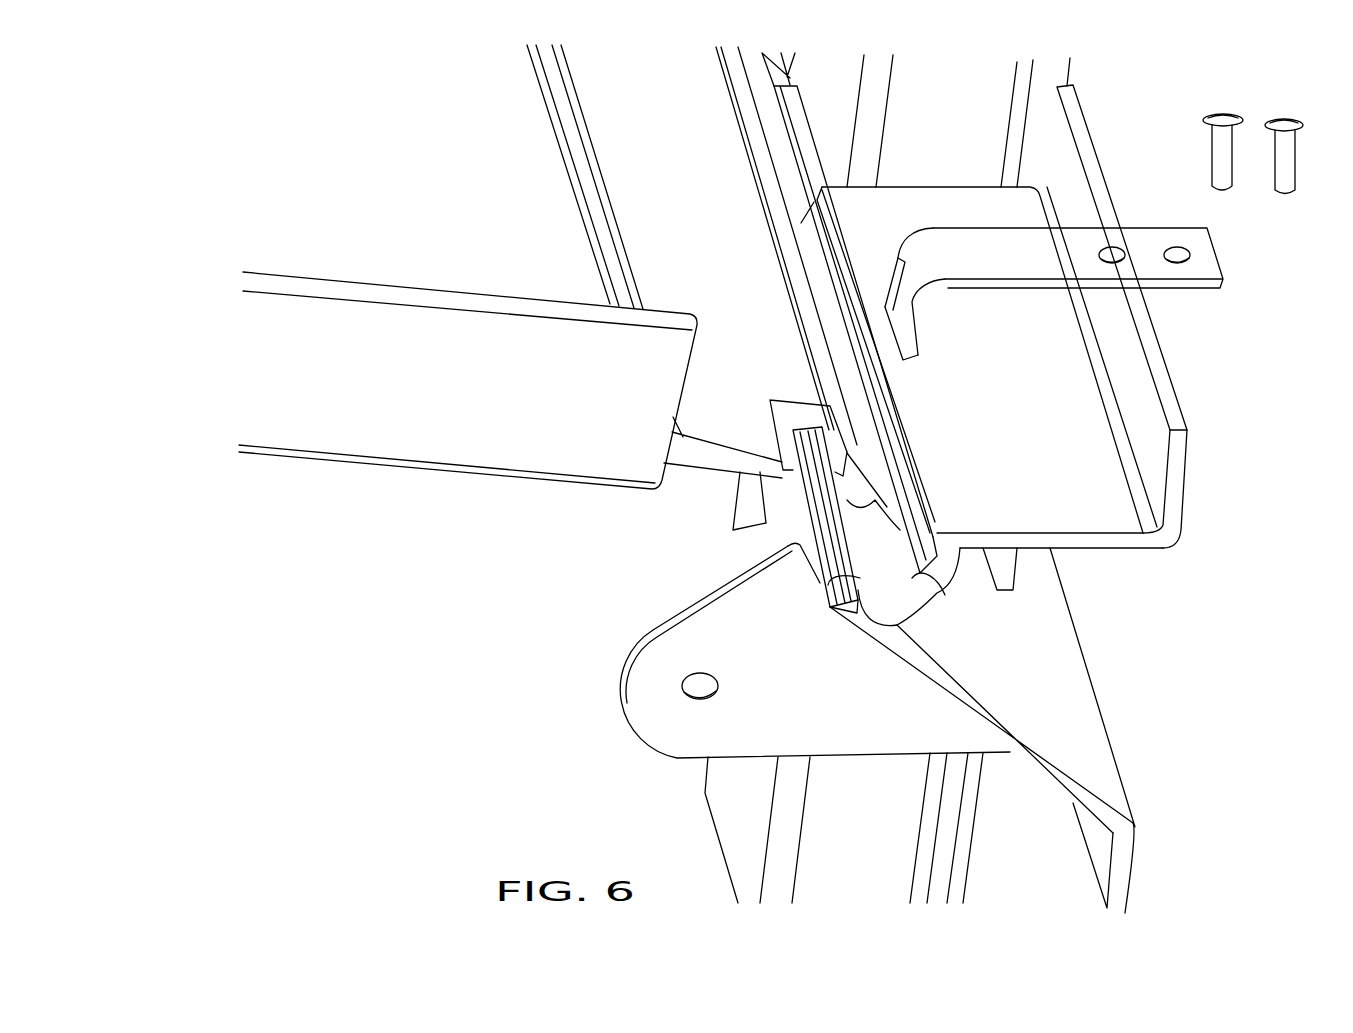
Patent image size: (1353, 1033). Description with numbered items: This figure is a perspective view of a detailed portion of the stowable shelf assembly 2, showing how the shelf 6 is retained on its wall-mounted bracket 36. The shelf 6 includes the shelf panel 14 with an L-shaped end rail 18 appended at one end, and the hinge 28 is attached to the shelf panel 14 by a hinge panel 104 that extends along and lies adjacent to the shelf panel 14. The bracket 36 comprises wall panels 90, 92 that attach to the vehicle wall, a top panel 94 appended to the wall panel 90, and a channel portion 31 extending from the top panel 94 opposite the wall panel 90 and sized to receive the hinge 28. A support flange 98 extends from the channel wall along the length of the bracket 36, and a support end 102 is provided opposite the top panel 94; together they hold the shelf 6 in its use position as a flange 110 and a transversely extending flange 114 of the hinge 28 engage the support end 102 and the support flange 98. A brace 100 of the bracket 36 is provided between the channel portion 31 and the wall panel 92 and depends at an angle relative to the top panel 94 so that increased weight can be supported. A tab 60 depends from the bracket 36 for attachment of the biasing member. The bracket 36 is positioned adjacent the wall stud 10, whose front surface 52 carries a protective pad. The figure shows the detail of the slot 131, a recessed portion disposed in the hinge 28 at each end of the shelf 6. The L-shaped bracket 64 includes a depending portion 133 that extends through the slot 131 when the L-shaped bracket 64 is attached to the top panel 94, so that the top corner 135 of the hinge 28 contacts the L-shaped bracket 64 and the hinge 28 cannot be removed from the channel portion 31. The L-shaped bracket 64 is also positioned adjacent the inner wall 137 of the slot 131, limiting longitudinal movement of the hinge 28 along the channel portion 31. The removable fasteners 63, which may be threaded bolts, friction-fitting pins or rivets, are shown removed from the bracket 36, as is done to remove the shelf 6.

The stowable shelf assembly 2 is at (493, 636).
The shelf 6 is at (361, 494).
The wall stud 10 is at (838, 82).
The shelf panel 14 is at (353, 195).
The end rail 18 is at (485, 398).
The hinge 28 is at (658, 226).
The channel portion 31 is at (893, 585).
The bracket 36 is at (1068, 403).
The front surface 52 is at (848, 128).
The tab 60 is at (745, 715).
The fasteners 63 is at (1208, 150).
The L-shaped bracket 64 is at (991, 242).
The wall panel 90 is at (1148, 430).
The wall panel 92 is at (1105, 850).
The top panel 94 is at (1080, 477).
The support flange 98 is at (908, 512).
The brace 100 is at (1062, 701).
The support end 102 is at (833, 590).
The hinge panel 104 is at (730, 280).
The flange 110 is at (857, 596).
The flange 114 is at (900, 533).
The slot 131 is at (842, 436).
The depending portion 133 is at (899, 337).
The top corner 135 is at (850, 448).
The inner wall 137 is at (795, 400).